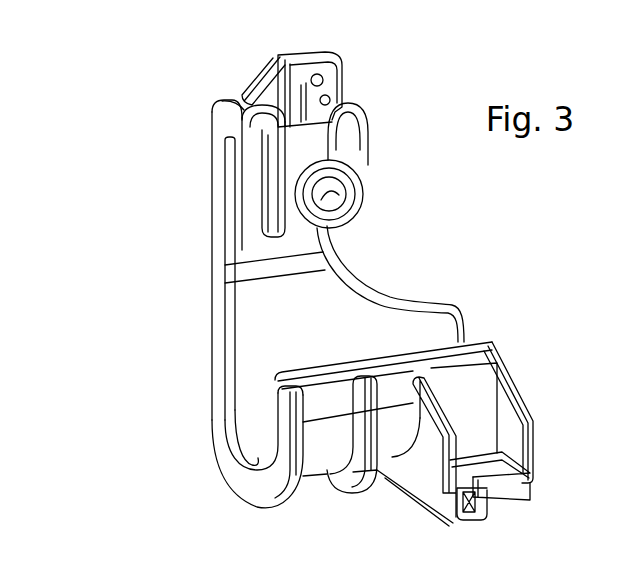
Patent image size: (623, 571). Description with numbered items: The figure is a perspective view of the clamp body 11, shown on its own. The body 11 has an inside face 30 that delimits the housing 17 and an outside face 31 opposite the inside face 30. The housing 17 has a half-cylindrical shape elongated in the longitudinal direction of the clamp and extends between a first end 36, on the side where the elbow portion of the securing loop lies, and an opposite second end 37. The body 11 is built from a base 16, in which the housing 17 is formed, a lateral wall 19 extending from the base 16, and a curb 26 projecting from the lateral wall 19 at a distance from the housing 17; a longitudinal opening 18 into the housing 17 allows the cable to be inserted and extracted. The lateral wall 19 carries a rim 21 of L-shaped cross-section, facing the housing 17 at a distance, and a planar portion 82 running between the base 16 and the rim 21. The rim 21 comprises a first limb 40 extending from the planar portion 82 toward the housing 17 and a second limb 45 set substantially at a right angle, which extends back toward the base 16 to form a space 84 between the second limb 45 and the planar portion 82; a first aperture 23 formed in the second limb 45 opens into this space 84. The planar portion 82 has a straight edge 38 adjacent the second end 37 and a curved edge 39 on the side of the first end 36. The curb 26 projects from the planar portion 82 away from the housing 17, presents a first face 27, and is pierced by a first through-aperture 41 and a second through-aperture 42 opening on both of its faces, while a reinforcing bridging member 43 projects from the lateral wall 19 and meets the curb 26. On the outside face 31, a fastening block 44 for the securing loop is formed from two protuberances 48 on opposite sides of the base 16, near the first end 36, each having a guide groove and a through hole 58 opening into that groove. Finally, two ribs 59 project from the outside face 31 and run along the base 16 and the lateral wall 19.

The body 11 is at (74, 60).
The base 16 is at (222, 500).
The housing 17 is at (240, 398).
The longitudinal opening 18 is at (418, 332).
The lateral wall 19 is at (160, 291).
The rim 21 is at (240, 158).
The first aperture 23 is at (338, 203).
The curb 26 is at (330, 52).
The first face 27 is at (338, 77).
The inside face 30 is at (266, 326).
The outside face 31 is at (393, 455).
The first end 36 is at (489, 329).
The second end 37 is at (223, 441).
The straight edge 38 is at (212, 243).
The curved edge 39 is at (382, 294).
The first limb 40 is at (246, 107).
The first through-aperture 41 is at (318, 74).
The second through-aperture 42 is at (330, 98).
The reinforcing bridging member 43 is at (278, 80).
The fastening block 44 is at (557, 465).
The second limb 45 is at (272, 182).
The protuberance 48 is at (512, 493).
The through hole 58 is at (468, 507).
The rib 59 is at (262, 485).
The planar portion 82 is at (275, 295).
The space 84 is at (231, 204).